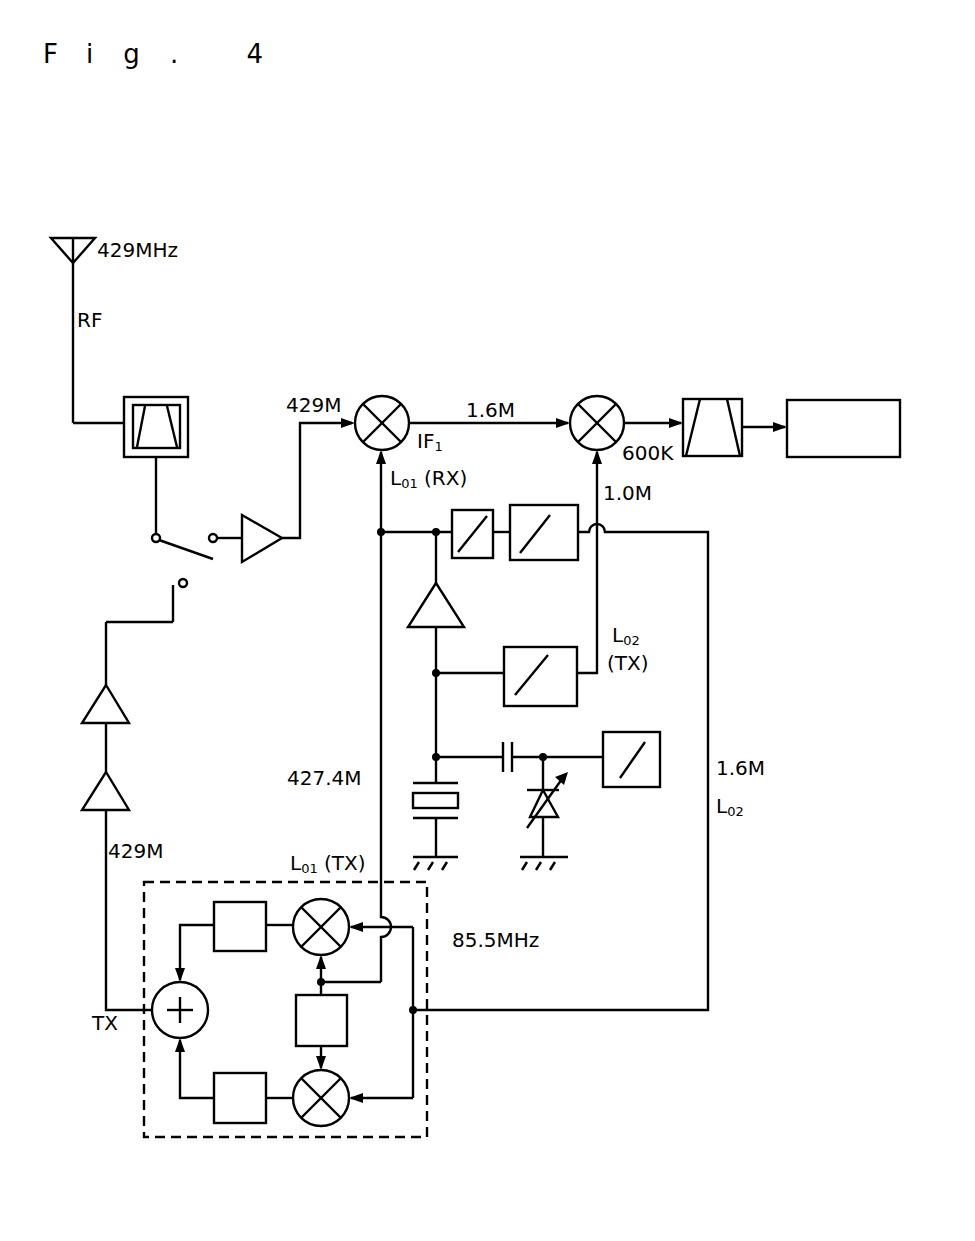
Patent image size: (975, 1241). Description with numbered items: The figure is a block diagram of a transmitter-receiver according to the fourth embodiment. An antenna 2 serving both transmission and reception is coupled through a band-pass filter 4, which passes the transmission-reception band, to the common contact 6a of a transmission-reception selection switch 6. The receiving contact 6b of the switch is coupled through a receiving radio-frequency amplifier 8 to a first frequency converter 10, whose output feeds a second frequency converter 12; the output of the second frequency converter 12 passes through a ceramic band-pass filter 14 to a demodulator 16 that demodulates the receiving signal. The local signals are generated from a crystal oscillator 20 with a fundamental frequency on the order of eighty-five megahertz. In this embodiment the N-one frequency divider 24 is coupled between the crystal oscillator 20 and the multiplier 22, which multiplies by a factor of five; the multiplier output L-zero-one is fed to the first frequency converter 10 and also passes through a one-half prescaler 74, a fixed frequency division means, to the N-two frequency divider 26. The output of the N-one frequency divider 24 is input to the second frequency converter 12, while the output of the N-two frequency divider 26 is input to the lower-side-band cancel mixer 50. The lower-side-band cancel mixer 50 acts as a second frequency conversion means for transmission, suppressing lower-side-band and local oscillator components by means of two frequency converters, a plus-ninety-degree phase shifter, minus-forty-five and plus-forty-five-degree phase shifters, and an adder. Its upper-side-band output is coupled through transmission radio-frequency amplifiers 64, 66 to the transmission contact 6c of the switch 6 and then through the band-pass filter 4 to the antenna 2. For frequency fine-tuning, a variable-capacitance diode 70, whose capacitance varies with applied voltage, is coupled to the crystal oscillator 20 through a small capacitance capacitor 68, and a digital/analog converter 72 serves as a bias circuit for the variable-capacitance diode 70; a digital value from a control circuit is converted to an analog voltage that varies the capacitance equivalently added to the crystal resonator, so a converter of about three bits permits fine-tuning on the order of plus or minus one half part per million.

The antenna 2 is at (65, 238).
The band-pass filter 4 is at (188, 425).
The transmission-reception selection switch 6 is at (173, 548).
The common contact 6a is at (153, 545).
The receiving contact 6b is at (213, 533).
The transmission contact 6c is at (188, 584).
The receiving radio-frequency amplifier 8 is at (270, 556).
The first frequency converter 10 is at (390, 396).
The second frequency converter 12 is at (602, 396).
The band-pass filter 14 is at (712, 398).
The demodulator 16 is at (845, 400).
The crystal oscillator 20 is at (430, 782).
The multiplier 22 is at (422, 608).
The N1 frequency divider 24 is at (530, 647).
The N2 frequency divider 26 is at (545, 562).
The lower-side-band cancel mixer 50 is at (427, 1068).
The transmission radio-frequency amplifier 64 is at (112, 795).
The transmission radio-frequency amplifier 66 is at (112, 707).
The small capacitance capacitor 68 is at (506, 745).
The variable-capacitance diode 70 is at (558, 800).
The digital/analog converter 72 is at (652, 732).
The 1/2 prescaler 74 is at (480, 510).